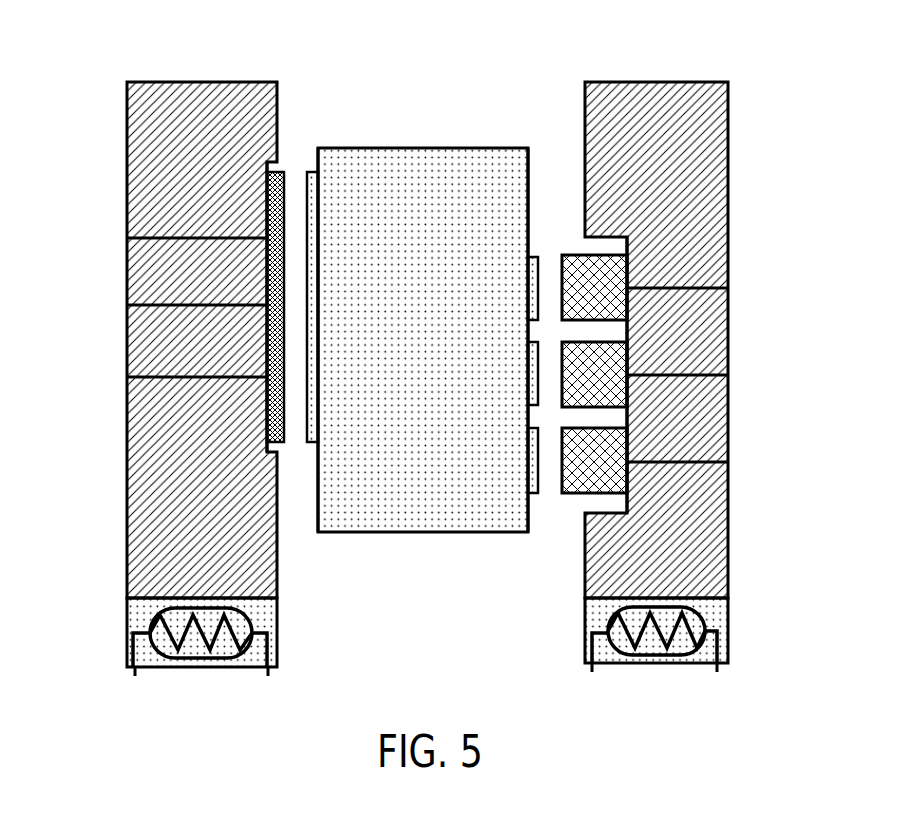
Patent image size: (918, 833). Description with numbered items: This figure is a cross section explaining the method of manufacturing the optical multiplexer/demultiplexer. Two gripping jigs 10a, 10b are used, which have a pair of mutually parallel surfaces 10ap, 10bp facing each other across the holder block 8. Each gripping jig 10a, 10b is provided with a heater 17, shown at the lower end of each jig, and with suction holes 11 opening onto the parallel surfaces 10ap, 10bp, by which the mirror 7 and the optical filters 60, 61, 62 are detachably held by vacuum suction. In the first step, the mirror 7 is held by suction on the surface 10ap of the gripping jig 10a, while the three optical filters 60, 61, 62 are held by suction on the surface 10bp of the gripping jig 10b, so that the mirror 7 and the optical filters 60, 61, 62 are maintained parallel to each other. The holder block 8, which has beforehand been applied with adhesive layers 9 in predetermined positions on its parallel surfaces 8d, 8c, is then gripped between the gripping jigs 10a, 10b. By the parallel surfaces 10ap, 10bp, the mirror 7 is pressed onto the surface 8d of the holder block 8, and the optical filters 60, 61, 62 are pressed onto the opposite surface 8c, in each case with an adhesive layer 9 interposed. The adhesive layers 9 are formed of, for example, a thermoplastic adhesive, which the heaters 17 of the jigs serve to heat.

The gripping jig 10a is at (201, 82).
The parallel surface 10ap is at (268, 443).
The gripping jig 10b is at (653, 82).
The parallel surface 10bp is at (627, 505).
The suction holes 11 is at (127, 238).
The mirror 7 is at (278, 172).
The holder block 8 is at (400, 147).
The parallel surface 8d is at (308, 172).
The parallel surface 8c is at (528, 167).
The adhesive layers 9 is at (534, 257).
The optical filter 62 is at (577, 255).
The optical filter 61 is at (563, 358).
The optical filter 60 is at (578, 494).
The heater 17 is at (277, 647).